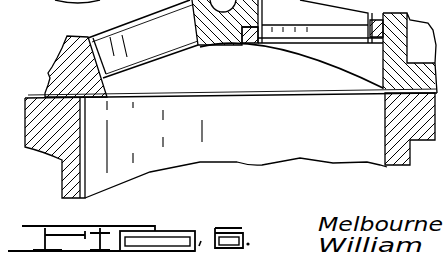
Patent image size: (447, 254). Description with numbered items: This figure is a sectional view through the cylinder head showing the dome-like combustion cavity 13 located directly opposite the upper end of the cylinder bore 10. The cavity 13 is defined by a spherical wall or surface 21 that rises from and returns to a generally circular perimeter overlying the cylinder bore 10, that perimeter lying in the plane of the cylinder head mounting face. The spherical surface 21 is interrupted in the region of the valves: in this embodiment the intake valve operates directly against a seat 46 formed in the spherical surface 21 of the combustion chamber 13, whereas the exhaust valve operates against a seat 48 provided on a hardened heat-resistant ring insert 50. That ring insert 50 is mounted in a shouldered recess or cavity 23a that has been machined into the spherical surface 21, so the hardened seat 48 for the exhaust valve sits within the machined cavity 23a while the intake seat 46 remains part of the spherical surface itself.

The cylinder bore 10 is at (150, 139).
The cylinder head combustion cavity 13 is at (240, 81).
The spherical wall or surface 21 is at (372, 80).
The machined cavity 23a is at (355, 55).
The seat 46 is at (198, 50).
The seat 48 is at (257, 43).
The hardened heat-resistant ring insert 50 is at (266, 21).